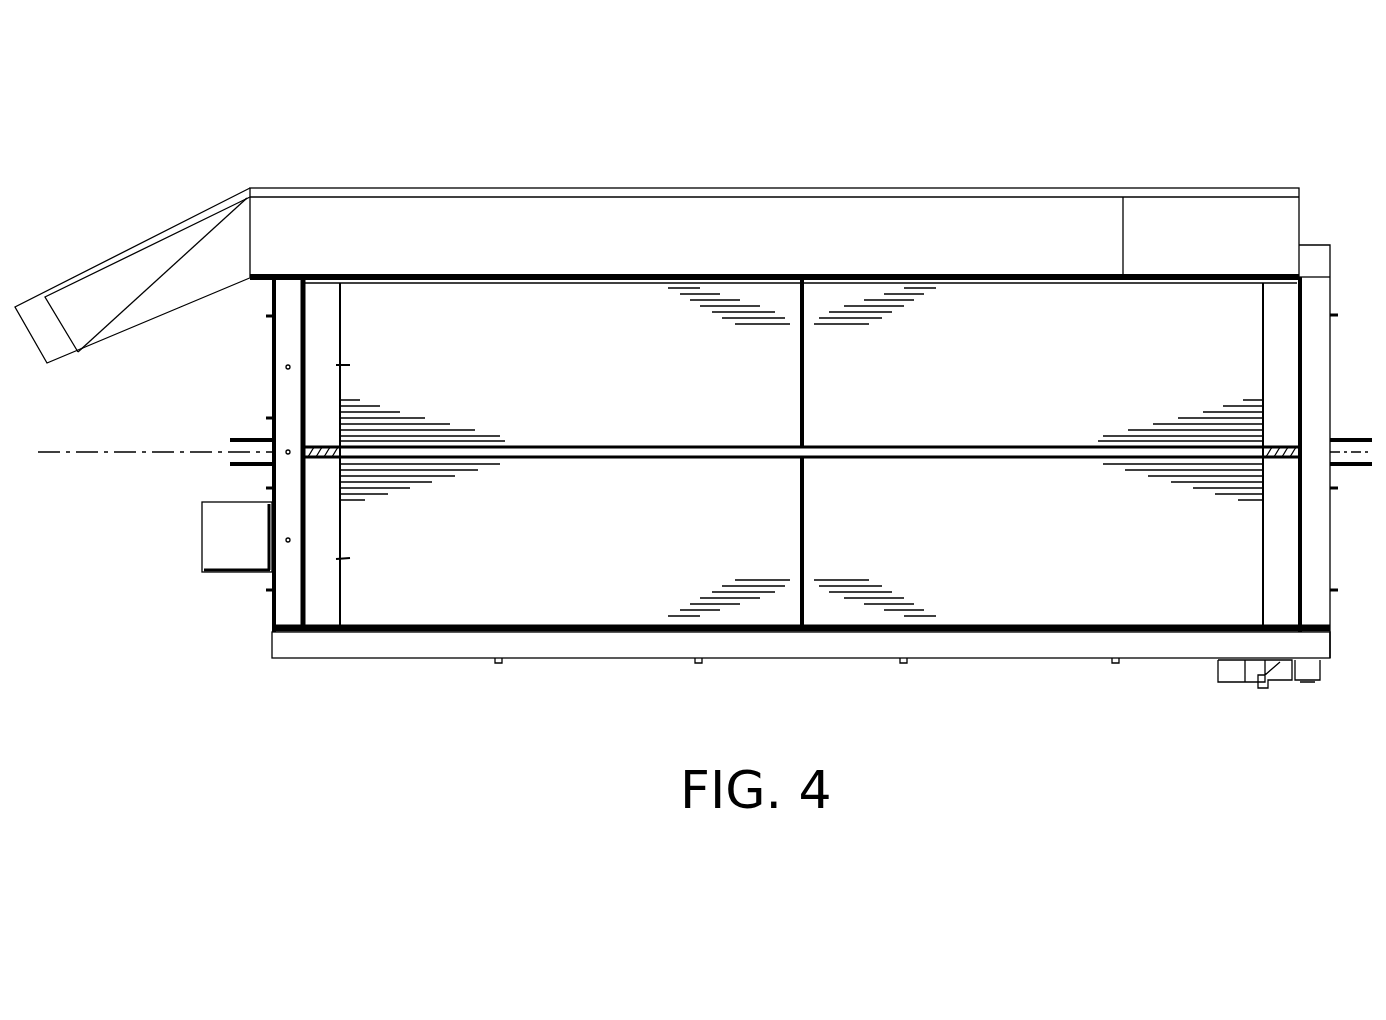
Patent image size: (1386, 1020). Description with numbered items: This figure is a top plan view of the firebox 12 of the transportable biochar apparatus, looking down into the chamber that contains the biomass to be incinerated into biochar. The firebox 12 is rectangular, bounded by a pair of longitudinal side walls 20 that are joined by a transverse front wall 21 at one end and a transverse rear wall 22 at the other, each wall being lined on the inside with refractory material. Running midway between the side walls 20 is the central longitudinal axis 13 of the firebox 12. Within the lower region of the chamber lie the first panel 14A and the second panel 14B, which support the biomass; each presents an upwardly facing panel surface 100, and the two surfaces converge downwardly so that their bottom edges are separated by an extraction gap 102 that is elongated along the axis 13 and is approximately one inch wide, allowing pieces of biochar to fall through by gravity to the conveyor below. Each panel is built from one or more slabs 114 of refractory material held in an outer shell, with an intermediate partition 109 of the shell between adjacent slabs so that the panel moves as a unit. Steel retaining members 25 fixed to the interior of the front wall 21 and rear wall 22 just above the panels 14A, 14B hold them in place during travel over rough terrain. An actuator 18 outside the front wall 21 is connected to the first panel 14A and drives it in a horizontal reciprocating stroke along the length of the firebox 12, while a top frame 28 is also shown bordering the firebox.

The firebox 12 is at (300, 133).
The central longitudinal axis 13 is at (150, 452).
The first panel 14A is at (336, 559).
The second panel 14B is at (336, 365).
The actuator 18 is at (230, 540).
The longitudinal side walls 20 is at (745, 645).
The transverse front wall 21 is at (286, 347).
The transverse rear wall 22 is at (1320, 367).
The steel retaining members 25 is at (330, 333).
The top frame 28 is at (900, 212).
The panel surface 100 is at (521, 369).
The extraction gap 102 is at (932, 455).
The intermediate partition 109 is at (805, 378).
The slab 114 is at (585, 322).